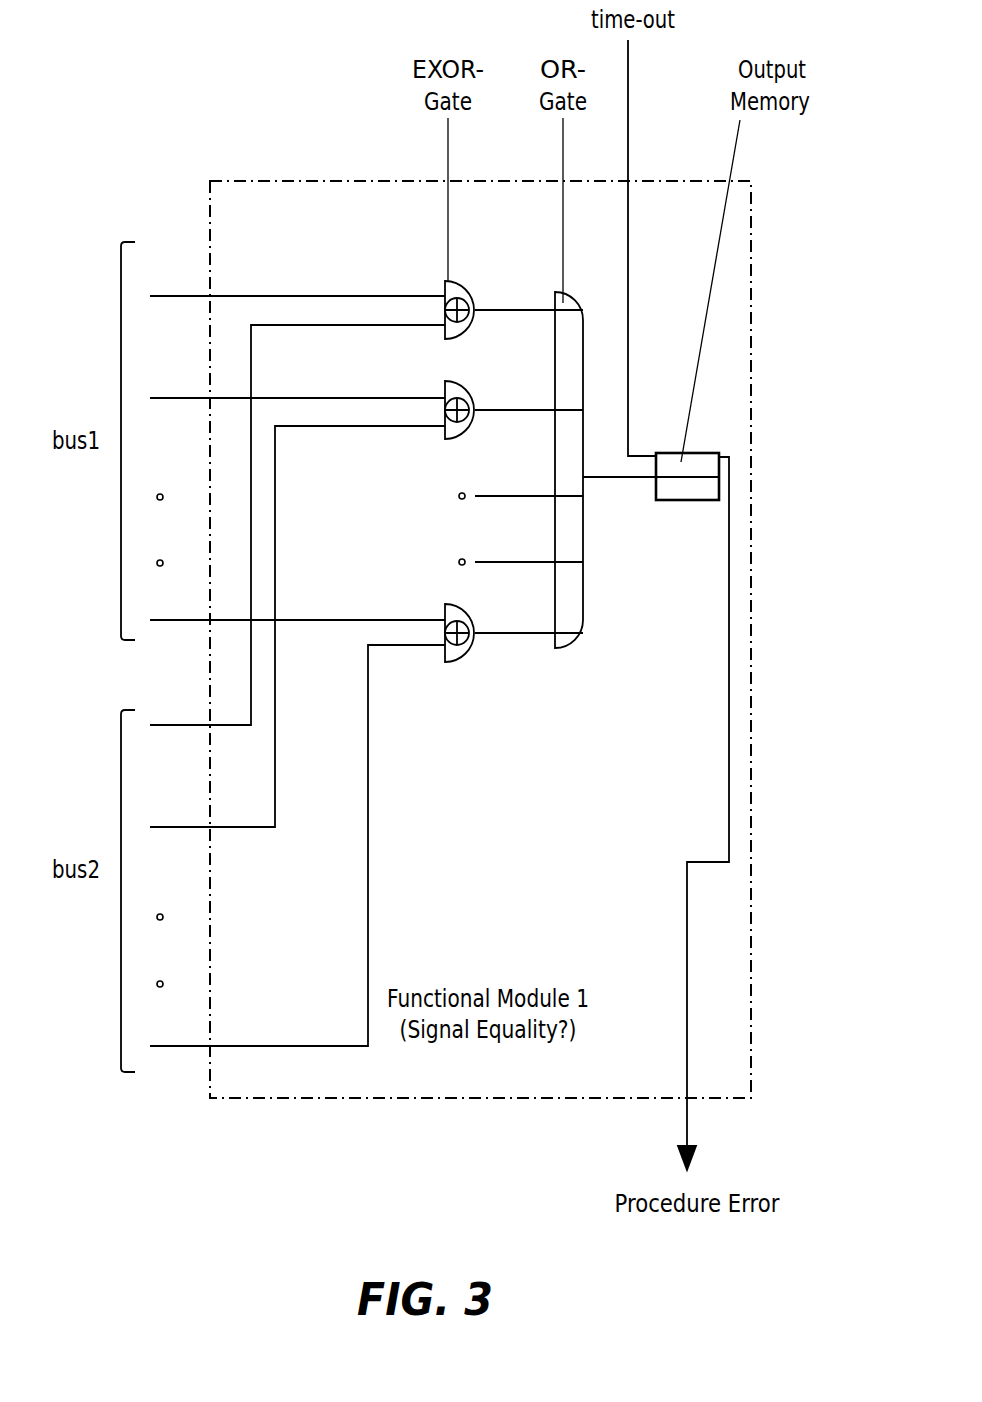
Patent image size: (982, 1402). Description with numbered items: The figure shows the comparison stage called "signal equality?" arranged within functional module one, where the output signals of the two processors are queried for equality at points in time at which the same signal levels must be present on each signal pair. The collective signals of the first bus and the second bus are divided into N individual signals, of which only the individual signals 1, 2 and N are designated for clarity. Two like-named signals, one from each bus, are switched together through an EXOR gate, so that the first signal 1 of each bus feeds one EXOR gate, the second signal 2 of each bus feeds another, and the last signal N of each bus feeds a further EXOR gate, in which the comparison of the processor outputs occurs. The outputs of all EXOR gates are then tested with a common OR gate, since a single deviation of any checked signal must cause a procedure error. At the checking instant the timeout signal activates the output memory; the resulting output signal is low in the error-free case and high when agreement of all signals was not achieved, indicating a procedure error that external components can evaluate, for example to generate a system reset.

The individual signal 1 is at (297, 525).
The individual signal 2 is at (297, 629).
The individual signal N is at (297, 849).